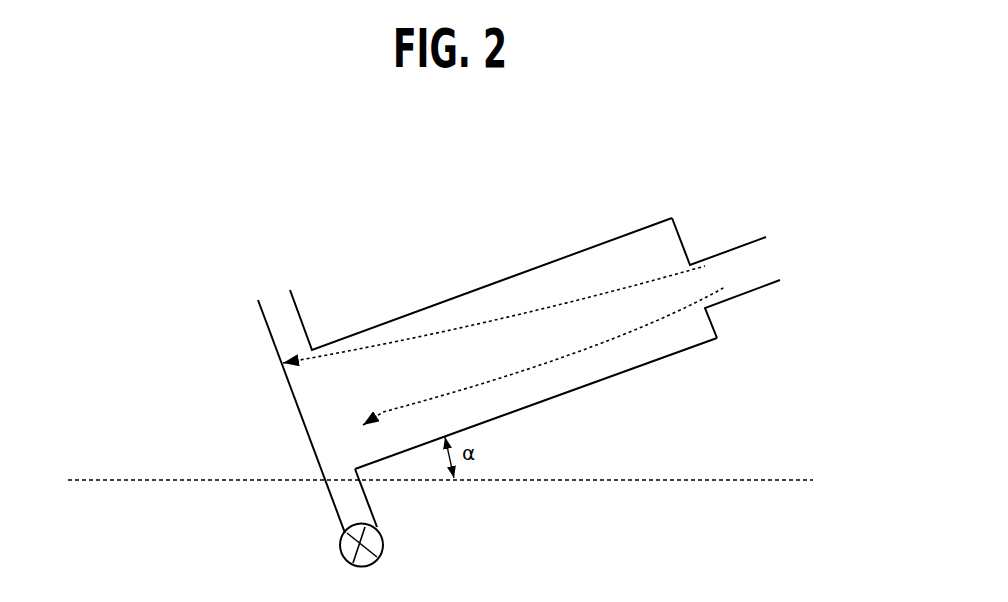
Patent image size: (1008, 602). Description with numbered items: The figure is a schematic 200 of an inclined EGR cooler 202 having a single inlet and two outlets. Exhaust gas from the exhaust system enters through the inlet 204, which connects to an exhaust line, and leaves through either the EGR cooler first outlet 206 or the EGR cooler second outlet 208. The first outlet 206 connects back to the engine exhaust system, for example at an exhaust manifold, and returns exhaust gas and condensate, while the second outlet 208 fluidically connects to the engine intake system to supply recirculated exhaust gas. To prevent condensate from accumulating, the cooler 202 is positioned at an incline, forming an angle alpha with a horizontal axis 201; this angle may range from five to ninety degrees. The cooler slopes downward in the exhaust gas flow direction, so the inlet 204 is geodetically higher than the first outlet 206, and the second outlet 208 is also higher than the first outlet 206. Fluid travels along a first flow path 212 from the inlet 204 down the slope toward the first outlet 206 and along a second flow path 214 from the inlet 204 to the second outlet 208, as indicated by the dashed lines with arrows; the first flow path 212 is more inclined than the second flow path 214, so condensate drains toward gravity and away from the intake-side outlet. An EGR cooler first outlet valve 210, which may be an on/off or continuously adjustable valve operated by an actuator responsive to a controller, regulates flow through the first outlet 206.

The schematic 200 is at (173, 203).
The horizontal axis 201 is at (122, 477).
The EGR cooler 202 is at (550, 267).
The inlet 204 is at (747, 240).
The EGR cooler first outlet 206 is at (330, 500).
The EGR cooler second outlet 208 is at (258, 302).
The EGR cooler first outlet valve 210 is at (343, 547).
The first flow path 212 is at (472, 387).
The second flow path 214 is at (398, 350).